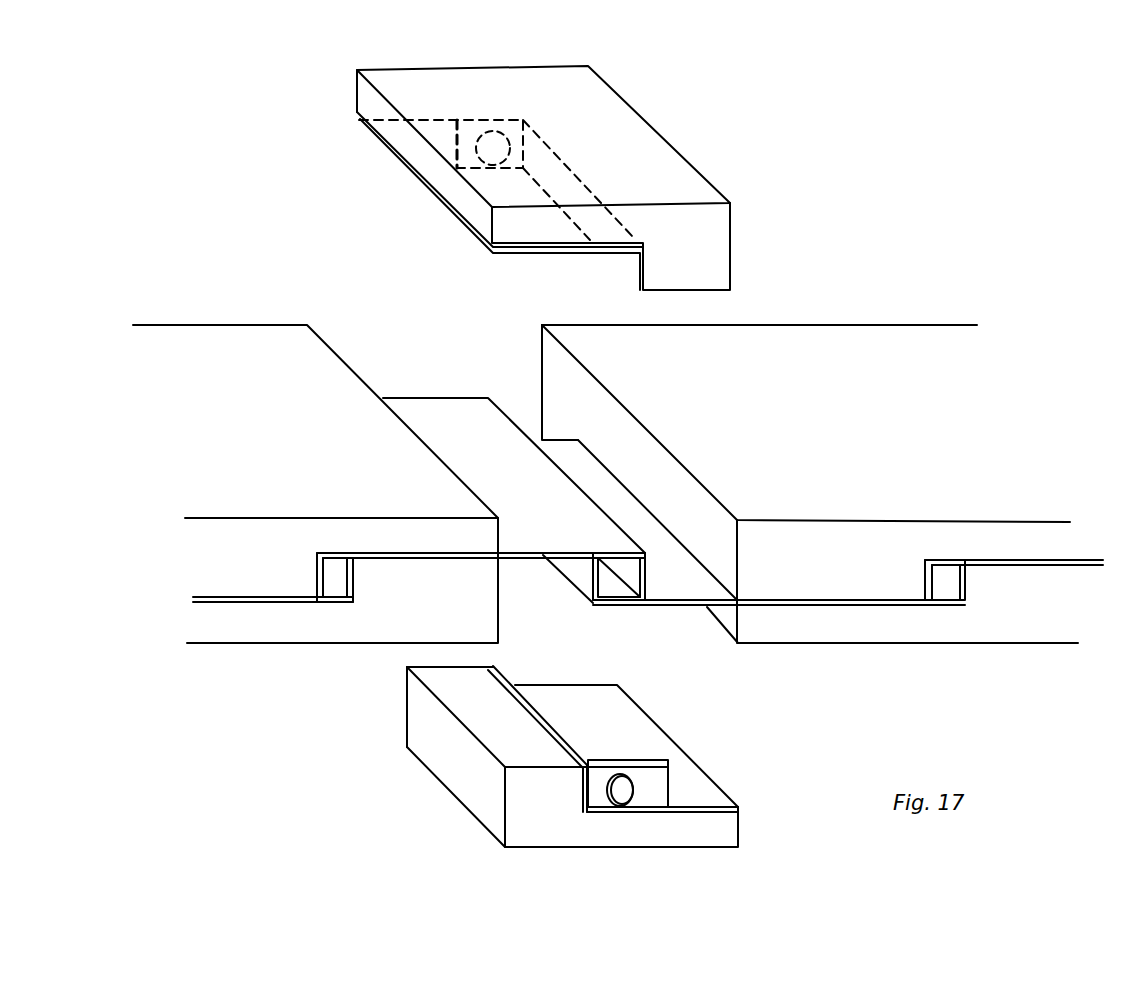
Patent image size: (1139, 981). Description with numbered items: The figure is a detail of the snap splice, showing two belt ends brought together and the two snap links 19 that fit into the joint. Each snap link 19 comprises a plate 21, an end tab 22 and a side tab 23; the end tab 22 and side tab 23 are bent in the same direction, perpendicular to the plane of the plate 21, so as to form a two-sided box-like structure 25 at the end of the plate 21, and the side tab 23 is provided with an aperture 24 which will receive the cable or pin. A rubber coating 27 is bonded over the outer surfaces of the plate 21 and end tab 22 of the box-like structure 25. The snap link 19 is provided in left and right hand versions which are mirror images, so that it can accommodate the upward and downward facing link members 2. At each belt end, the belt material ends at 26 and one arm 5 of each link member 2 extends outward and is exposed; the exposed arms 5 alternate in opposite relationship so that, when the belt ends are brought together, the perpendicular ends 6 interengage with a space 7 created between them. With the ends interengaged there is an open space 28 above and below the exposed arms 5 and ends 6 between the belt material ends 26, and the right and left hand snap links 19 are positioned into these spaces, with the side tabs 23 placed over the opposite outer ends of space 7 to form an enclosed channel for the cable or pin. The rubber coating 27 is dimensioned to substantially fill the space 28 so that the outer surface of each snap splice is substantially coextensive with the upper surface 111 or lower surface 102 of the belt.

The link member 2 is at (370, 557).
The arm 5 is at (417, 408).
The end 6 is at (590, 588).
The space 7 is at (608, 600).
The snap link 19 is at (515, 478).
The plate 21 is at (477, 237).
The end tab 22 is at (632, 268).
The side tab 23 is at (482, 142).
The aperture 24 is at (482, 150).
The box-like structure 25 is at (610, 722).
The belt material end 26 is at (662, 465).
The rubber coating 27 is at (667, 162).
The open space 28 is at (618, 488).
The lower surface 102 is at (280, 645).
The upper surface 111 is at (213, 353).